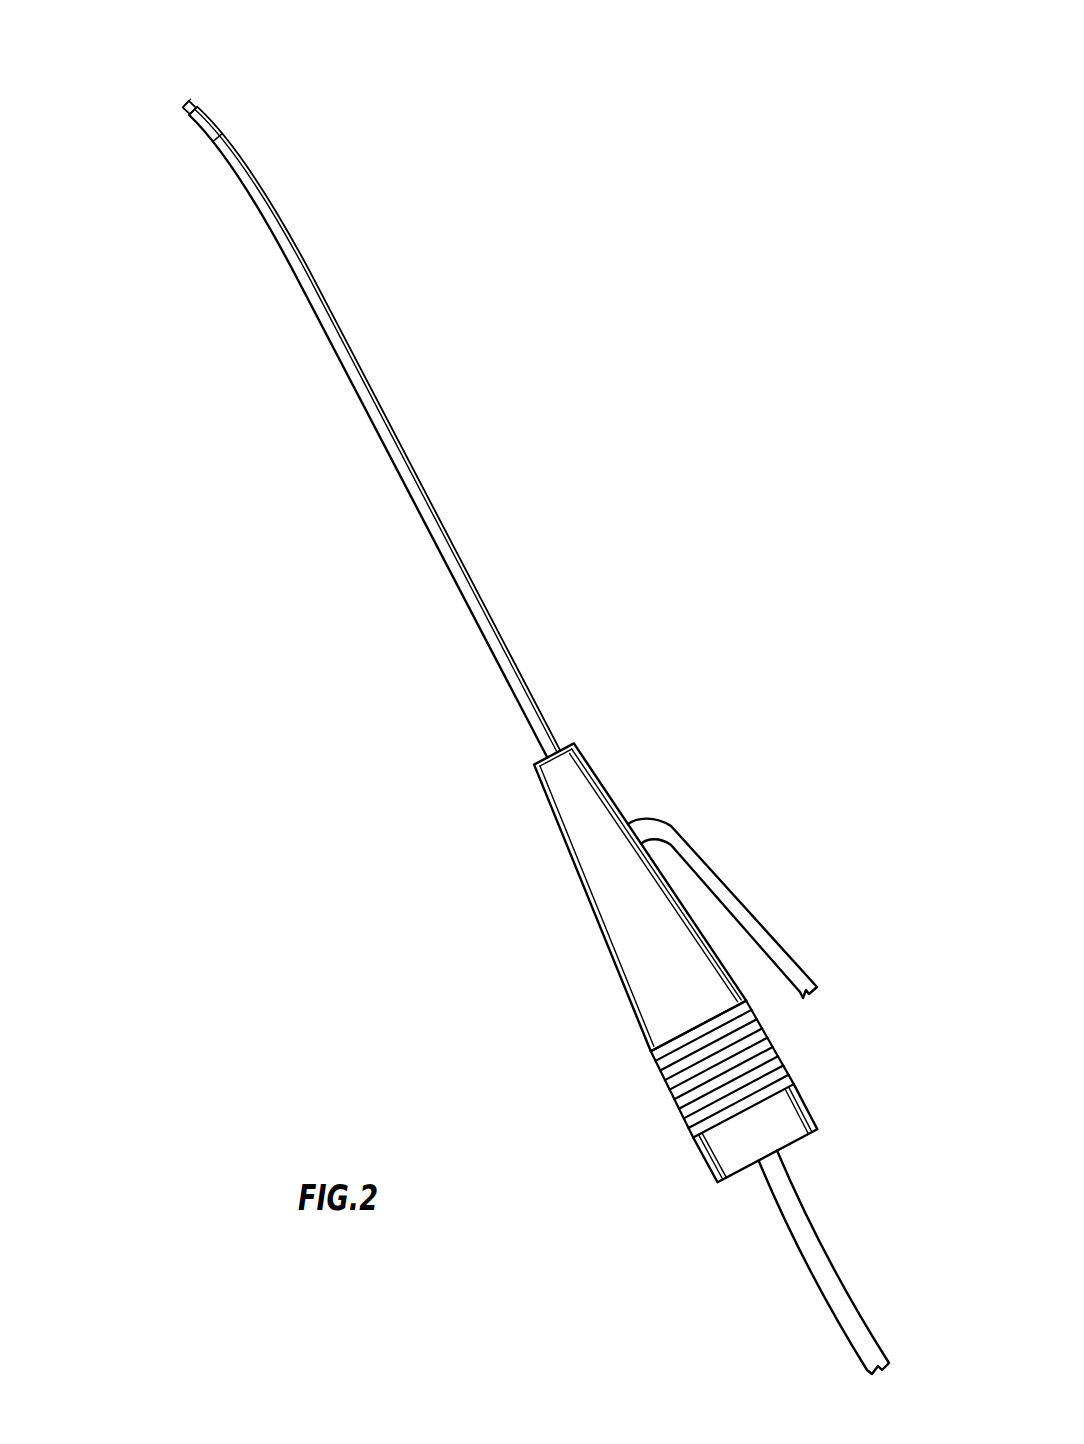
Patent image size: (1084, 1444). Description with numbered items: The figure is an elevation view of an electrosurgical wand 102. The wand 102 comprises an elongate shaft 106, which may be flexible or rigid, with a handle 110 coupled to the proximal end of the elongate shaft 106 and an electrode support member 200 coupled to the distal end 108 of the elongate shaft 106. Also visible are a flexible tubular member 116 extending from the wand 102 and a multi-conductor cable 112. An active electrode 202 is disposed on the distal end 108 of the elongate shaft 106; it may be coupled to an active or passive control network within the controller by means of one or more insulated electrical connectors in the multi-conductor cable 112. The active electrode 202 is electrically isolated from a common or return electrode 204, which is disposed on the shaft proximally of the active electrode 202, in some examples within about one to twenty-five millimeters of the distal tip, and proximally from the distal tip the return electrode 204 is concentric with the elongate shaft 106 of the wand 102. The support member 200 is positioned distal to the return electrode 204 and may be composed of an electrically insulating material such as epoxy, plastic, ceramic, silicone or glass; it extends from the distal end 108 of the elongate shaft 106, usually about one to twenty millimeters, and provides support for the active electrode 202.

The wand 102 is at (196, 297).
The elongate shaft 106 is at (432, 498).
The distal end 108 is at (196, 82).
The handle 110 is at (587, 847).
The multi-conductor cable 112 is at (811, 1210).
The flexible tubular member 116 is at (748, 900).
The electrode support member 200 is at (193, 104).
The active electrode 202 is at (183, 107).
The return electrode 204 is at (222, 122).